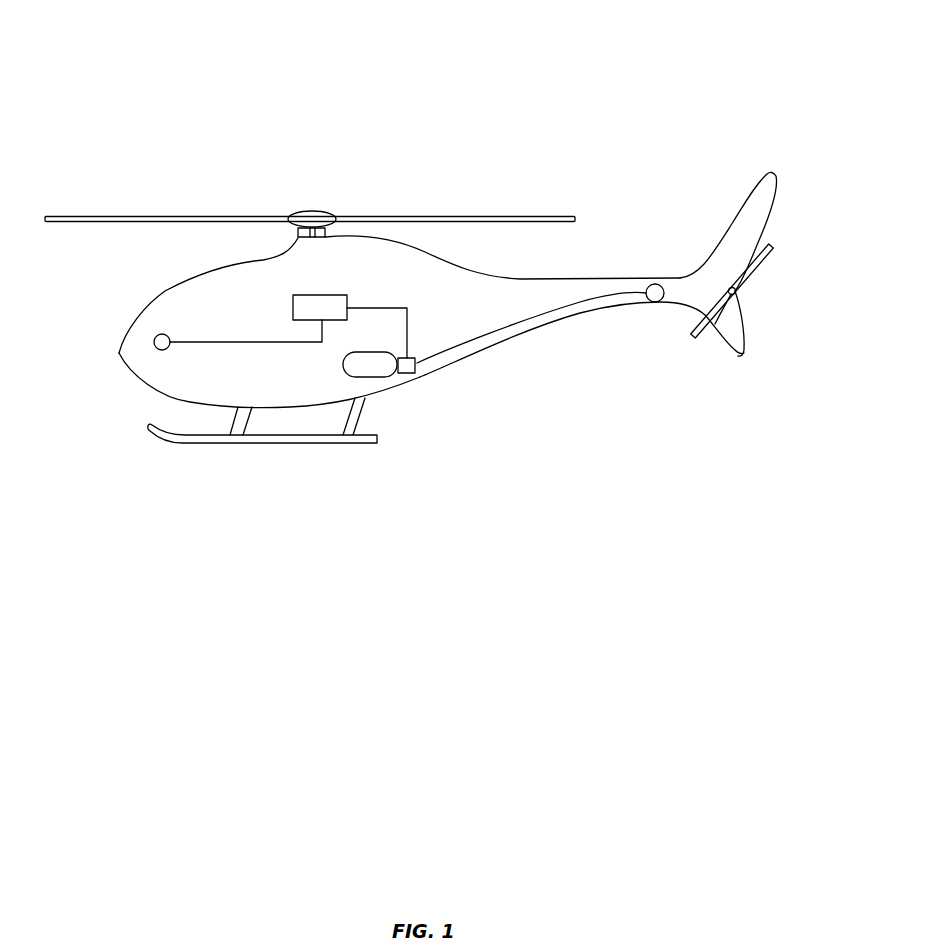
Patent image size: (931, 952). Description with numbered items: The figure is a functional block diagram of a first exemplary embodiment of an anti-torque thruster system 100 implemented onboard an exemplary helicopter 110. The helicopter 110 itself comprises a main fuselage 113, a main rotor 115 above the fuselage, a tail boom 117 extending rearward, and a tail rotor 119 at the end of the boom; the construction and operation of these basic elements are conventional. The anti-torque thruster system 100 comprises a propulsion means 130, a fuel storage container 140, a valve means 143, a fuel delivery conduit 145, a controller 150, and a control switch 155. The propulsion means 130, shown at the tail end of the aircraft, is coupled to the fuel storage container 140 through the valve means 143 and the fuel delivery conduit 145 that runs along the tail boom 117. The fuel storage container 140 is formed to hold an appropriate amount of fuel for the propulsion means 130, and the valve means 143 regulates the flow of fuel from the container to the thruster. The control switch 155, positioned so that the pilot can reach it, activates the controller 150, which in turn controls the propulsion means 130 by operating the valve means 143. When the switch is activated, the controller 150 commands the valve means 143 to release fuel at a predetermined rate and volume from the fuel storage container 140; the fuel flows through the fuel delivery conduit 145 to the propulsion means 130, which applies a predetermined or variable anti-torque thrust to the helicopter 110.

The anti-torque thruster system 100 is at (272, 56).
The helicopter 110 is at (174, 179).
The main fuselage 113 is at (164, 292).
The main rotor 115 is at (419, 216).
The tail boom 117 is at (603, 277).
The tail rotor 119 is at (764, 266).
The propulsion means 130 is at (657, 308).
The fuel storage container 140 is at (394, 379).
The valve means 143 is at (421, 376).
The fuel delivery conduit 145 is at (526, 323).
The controller 150 is at (350, 295).
The control switch 155 is at (152, 346).